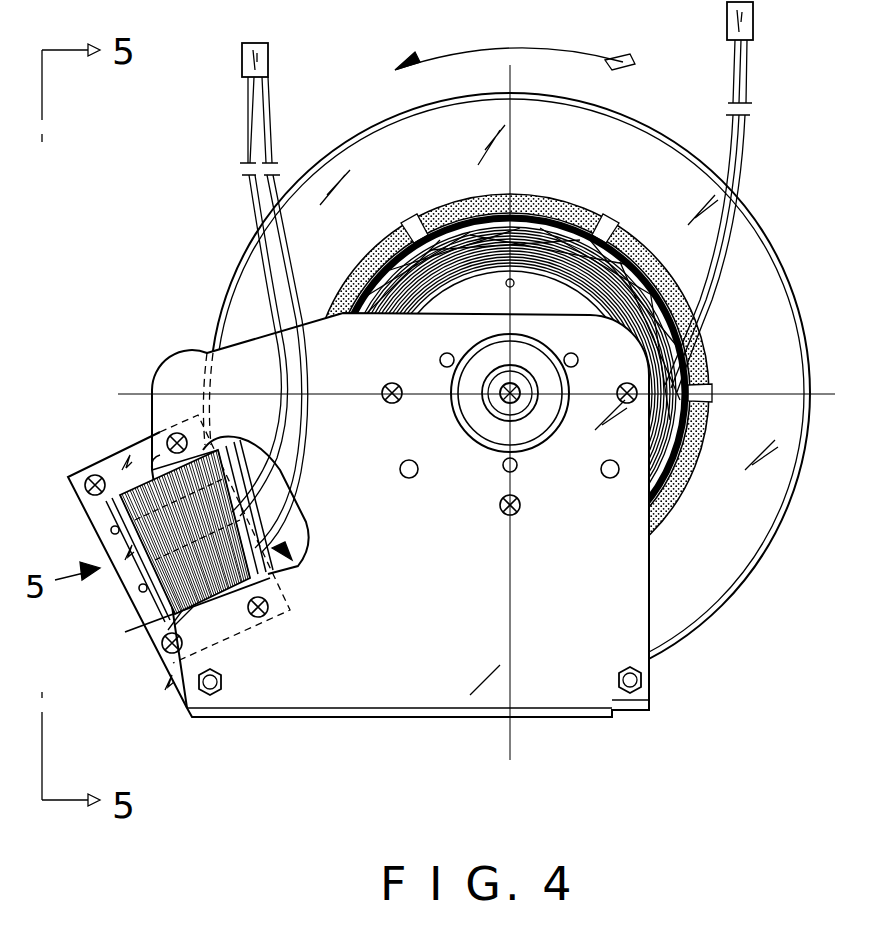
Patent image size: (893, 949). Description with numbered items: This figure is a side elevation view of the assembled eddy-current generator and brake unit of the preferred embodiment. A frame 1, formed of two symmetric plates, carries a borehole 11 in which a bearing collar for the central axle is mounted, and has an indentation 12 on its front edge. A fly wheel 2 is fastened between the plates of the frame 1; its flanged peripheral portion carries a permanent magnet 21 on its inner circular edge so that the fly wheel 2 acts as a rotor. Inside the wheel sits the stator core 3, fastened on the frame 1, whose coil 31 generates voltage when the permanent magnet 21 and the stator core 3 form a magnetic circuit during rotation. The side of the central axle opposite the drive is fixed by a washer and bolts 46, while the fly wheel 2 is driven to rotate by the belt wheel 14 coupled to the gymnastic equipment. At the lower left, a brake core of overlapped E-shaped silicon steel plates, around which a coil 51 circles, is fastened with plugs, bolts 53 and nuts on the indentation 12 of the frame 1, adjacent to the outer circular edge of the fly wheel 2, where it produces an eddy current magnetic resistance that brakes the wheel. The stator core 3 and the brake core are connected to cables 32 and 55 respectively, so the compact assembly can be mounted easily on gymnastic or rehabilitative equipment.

The frame 1 is at (448, 680).
The fly wheel 2 is at (765, 312).
The stator core 3 is at (540, 300).
The borehole 11 is at (465, 416).
The indentation 12 is at (300, 567).
The belt wheel 14 is at (632, 740).
The permanent magnet 21 is at (680, 285).
The coil 31 is at (660, 262).
The cable 32 is at (750, 66).
The bolts 46 is at (515, 398).
The coil 51 is at (185, 558).
The bolts 53 is at (168, 443).
The cable 55 is at (252, 200).